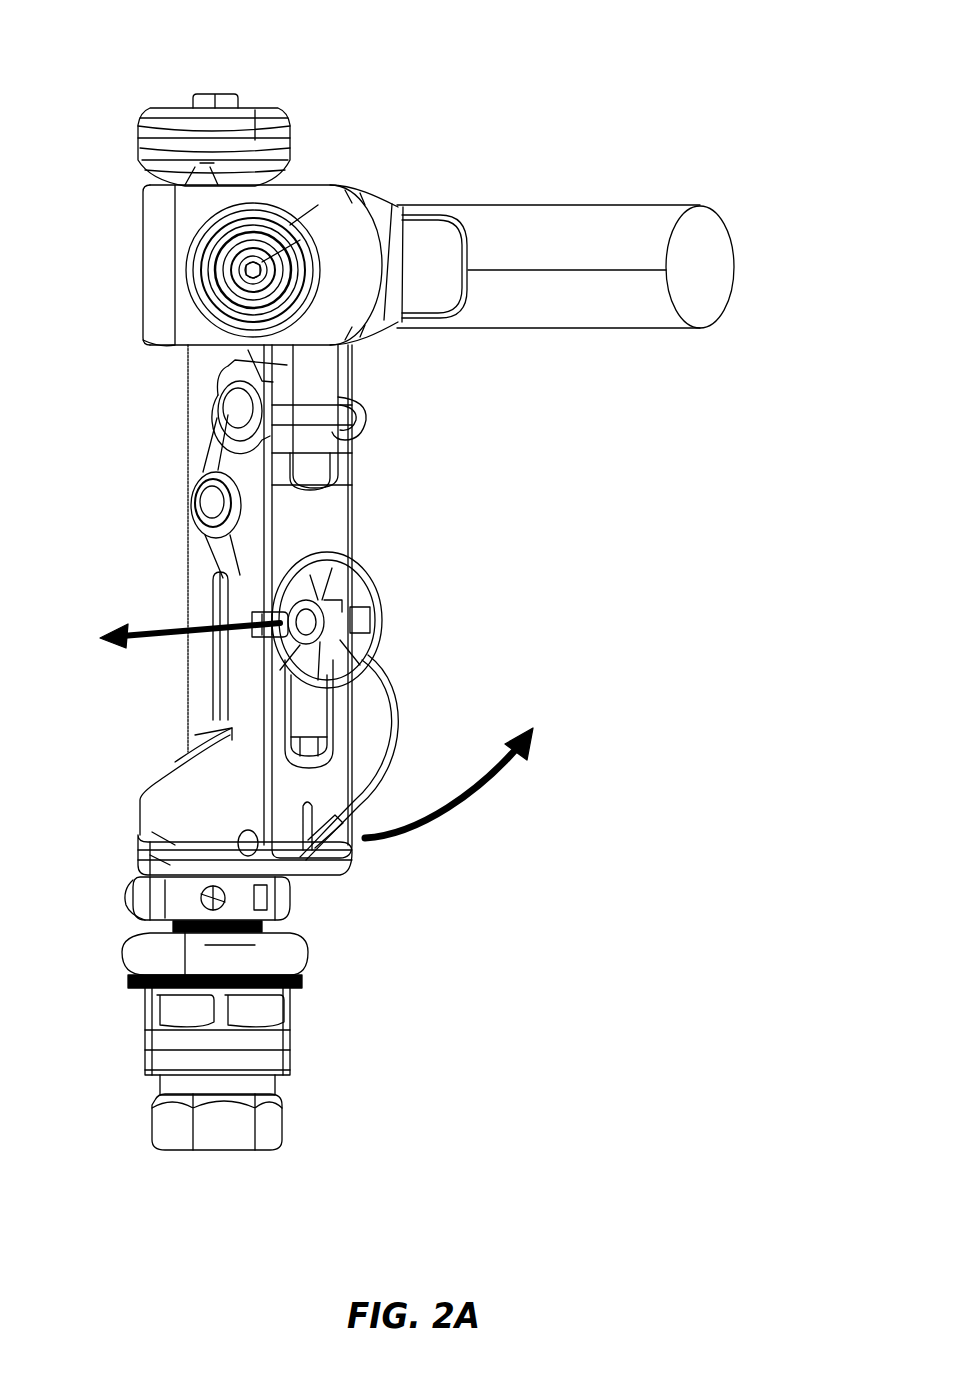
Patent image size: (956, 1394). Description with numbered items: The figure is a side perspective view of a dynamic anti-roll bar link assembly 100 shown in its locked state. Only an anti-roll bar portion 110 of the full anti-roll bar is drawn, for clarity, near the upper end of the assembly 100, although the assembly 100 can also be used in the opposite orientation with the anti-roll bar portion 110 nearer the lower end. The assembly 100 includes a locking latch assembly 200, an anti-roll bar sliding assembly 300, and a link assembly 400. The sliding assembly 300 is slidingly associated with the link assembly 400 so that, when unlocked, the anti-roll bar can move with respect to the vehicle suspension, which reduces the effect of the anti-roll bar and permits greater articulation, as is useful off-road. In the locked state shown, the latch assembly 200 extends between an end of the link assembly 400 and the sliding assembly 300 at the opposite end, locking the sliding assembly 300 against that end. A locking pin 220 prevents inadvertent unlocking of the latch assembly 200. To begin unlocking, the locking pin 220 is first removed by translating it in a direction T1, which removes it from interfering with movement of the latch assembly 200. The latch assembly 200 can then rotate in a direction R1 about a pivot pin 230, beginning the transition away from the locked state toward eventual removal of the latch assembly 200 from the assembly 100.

The dynamic anti-roll bar link assembly 100 is at (650, 82).
The anti-roll bar portion 110 is at (581, 308).
The locking latch assembly 200 is at (355, 531).
The locking pin 220 is at (357, 635).
The pivot pin 230 is at (210, 493).
The anti-roll bar sliding assembly 300 is at (331, 187).
The link assembly 400 is at (219, 93).
The direction T1 is at (165, 627).
The direction R1 is at (470, 806).